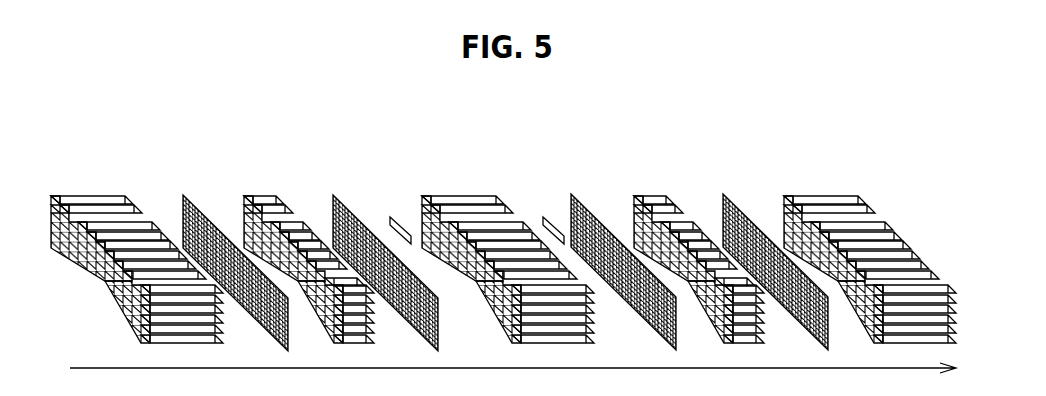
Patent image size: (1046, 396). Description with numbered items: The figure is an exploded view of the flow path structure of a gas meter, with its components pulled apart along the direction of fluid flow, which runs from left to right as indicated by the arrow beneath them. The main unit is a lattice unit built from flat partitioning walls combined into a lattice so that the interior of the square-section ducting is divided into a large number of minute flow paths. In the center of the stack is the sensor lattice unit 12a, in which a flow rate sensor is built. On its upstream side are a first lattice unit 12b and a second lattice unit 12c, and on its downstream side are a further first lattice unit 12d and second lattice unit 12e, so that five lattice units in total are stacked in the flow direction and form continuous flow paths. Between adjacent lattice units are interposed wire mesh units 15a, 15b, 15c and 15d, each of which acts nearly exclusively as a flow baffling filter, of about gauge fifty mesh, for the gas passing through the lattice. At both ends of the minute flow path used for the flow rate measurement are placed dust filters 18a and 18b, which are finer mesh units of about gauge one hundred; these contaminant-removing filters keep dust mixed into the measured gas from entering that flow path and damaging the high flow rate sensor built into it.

The sensor lattice unit 12a is at (460, 190).
The first lattice unit 12b is at (92, 188).
The second lattice unit 12c is at (258, 189).
The first lattice unit 12d is at (815, 190).
The second lattice unit 12e is at (647, 190).
The mesh unit 15a is at (177, 187).
The mesh unit 15b is at (330, 187).
The mesh unit 15c is at (568, 186).
The mesh unit 15d is at (720, 185).
The dust filter 18a is at (390, 208).
The dust filter 18b is at (542, 208).